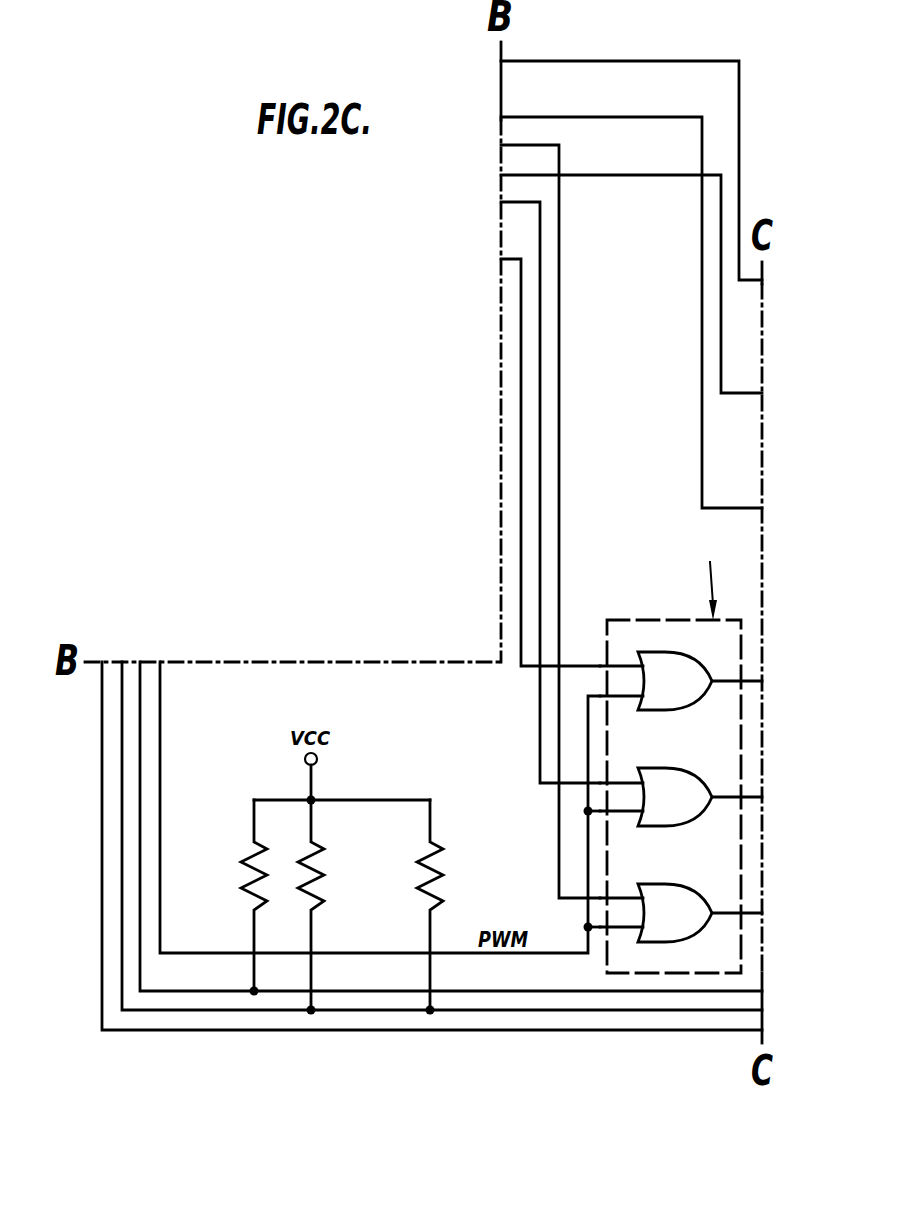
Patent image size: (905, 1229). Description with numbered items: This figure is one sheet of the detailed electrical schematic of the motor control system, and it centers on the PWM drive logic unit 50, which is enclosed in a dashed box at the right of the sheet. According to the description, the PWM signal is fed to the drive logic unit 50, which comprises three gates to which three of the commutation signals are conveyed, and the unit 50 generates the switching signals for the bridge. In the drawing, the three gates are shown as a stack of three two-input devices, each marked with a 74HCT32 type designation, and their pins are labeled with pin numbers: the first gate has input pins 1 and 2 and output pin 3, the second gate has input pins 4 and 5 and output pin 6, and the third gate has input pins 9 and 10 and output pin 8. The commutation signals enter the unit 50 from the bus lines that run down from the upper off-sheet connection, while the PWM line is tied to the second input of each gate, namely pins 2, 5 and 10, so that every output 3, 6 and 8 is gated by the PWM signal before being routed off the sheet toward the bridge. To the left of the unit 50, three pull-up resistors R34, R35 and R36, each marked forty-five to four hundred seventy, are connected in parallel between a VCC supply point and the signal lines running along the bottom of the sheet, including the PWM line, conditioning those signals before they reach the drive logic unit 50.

The drive logic unit 50 is at (625, 632).
The resistor R34 is at (351, 905).
The resistor R35 is at (471, 905).
The resistor R36 is at (219, 895).
The OR gate UBA input pin 1 is at (621, 653).
The OR gate UBA input pin 2 is at (621, 684).
The OR gate UBA output pin 3 is at (737, 668).
The OR gate UBB input pin 4 is at (621, 770).
The OR gate UBB input pin 5 is at (621, 798).
The OR gate UBB output pin 6 is at (737, 785).
The OR gate UBC output pin 8 is at (737, 899).
The OR gate UBC input pin 9 is at (621, 884).
The OR gate UBC input pin 10 is at (621, 914).